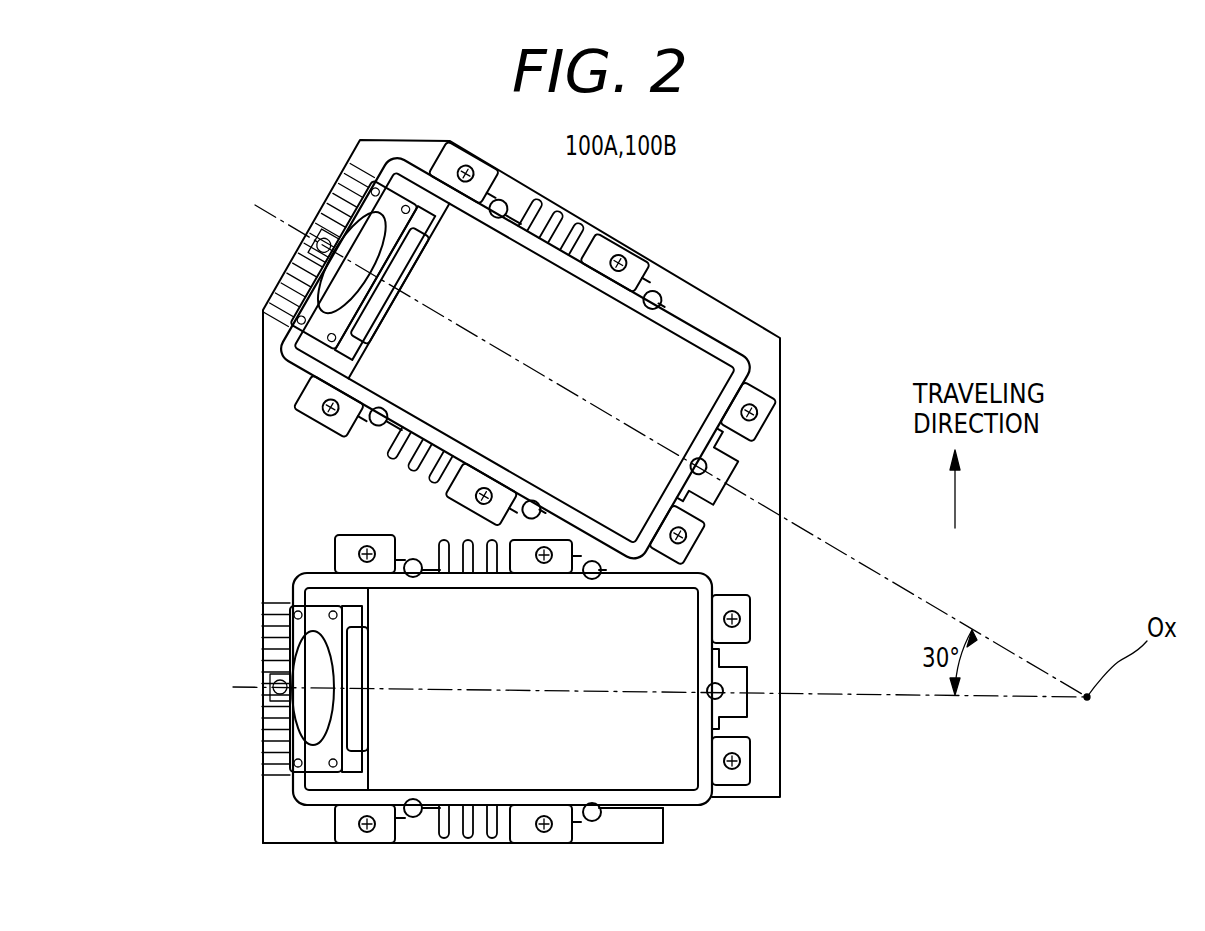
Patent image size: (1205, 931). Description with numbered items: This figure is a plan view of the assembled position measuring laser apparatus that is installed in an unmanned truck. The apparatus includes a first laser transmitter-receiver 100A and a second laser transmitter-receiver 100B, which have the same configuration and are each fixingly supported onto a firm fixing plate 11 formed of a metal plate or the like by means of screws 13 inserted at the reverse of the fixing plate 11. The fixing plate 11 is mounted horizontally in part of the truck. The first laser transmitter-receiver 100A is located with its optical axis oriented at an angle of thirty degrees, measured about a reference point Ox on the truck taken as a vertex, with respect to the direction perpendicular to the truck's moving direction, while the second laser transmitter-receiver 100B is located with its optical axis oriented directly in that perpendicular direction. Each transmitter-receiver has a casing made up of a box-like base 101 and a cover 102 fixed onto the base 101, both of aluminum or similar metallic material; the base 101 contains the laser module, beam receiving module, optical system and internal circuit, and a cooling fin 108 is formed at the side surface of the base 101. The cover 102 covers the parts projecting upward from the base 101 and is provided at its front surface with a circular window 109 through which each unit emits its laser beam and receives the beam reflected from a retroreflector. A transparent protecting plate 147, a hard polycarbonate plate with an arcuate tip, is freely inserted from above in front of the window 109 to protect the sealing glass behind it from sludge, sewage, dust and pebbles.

The fixing plate 11 is at (763, 477).
The screws 13 is at (653, 298).
The first laser transmitter-receiver 100A is at (713, 337).
The second laser transmitter-receiver 100B is at (720, 590).
The base 101 is at (720, 400).
The cover 102 is at (705, 373).
The cooling fin 108 is at (468, 845).
The window 109 is at (335, 279).
The transparent protecting plate 147 is at (338, 348).